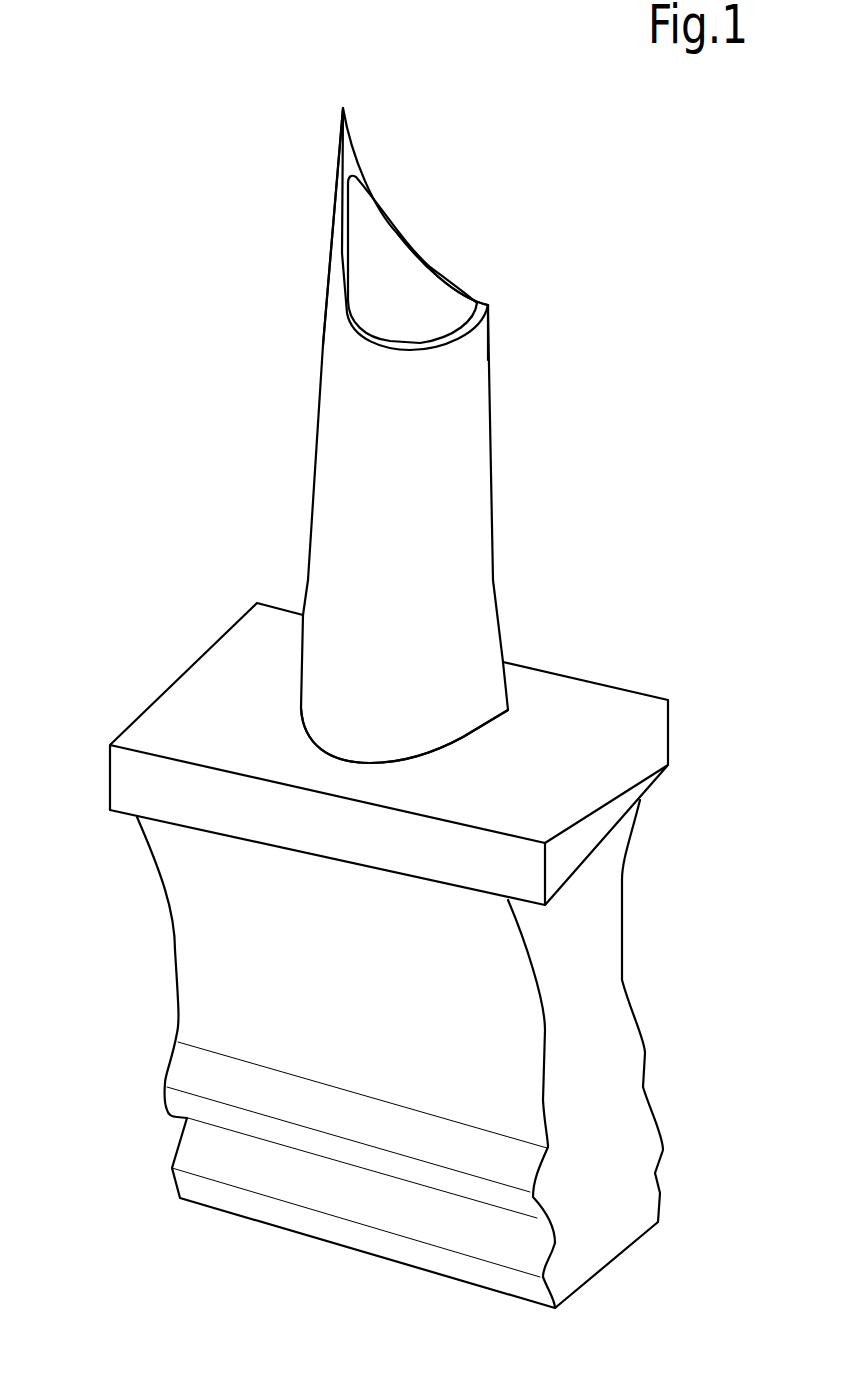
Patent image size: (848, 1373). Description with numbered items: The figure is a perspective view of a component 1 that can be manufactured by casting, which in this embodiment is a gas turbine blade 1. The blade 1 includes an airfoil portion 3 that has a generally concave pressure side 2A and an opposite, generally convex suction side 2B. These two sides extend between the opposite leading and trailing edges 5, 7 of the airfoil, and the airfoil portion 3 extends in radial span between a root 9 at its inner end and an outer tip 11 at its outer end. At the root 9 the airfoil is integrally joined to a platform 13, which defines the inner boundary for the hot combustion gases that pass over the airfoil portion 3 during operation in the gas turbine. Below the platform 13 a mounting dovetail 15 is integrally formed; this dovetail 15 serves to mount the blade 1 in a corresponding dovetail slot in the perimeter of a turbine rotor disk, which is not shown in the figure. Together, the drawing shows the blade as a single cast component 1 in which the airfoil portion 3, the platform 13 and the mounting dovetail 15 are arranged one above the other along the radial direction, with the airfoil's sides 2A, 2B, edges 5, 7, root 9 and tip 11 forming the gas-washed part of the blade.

The component 1 is at (426, 398).
The pressure side 2A is at (418, 256).
The suction side 2B is at (323, 345).
The airfoil portion 3 is at (420, 585).
The leading edge 5 is at (490, 337).
The trailing edge 7 is at (343, 108).
The root 9 is at (463, 737).
The outer tip 11 is at (352, 157).
The platform 13 is at (230, 698).
The mounting dovetail 15 is at (212, 1025).